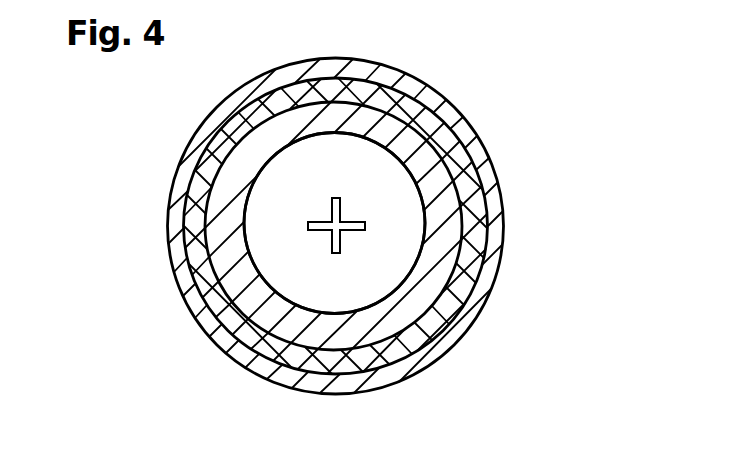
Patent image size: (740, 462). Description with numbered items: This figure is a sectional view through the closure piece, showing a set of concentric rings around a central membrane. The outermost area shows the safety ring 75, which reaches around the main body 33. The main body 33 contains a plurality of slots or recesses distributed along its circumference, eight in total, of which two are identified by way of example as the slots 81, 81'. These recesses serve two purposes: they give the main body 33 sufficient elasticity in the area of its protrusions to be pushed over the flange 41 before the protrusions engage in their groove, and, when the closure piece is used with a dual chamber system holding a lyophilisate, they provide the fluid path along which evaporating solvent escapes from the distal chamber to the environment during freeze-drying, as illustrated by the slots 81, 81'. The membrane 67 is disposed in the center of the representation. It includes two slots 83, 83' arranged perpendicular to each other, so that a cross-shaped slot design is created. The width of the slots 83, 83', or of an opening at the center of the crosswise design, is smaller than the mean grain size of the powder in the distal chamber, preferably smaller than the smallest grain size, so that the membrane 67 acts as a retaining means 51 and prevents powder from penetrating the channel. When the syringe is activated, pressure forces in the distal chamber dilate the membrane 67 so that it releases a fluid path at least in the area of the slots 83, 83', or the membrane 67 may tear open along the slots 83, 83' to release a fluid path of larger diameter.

The safety ring 75 is at (488, 192).
The slot 81 is at (369, 226).
The slot 81' is at (335, 195).
The main body 33 is at (477, 245).
The flange 41 is at (480, 297).
The membrane 67 is at (352, 167).
The retaining means 51 is at (407, 190).
The slot 83 is at (230, 246).
The slot 83' is at (226, 225).